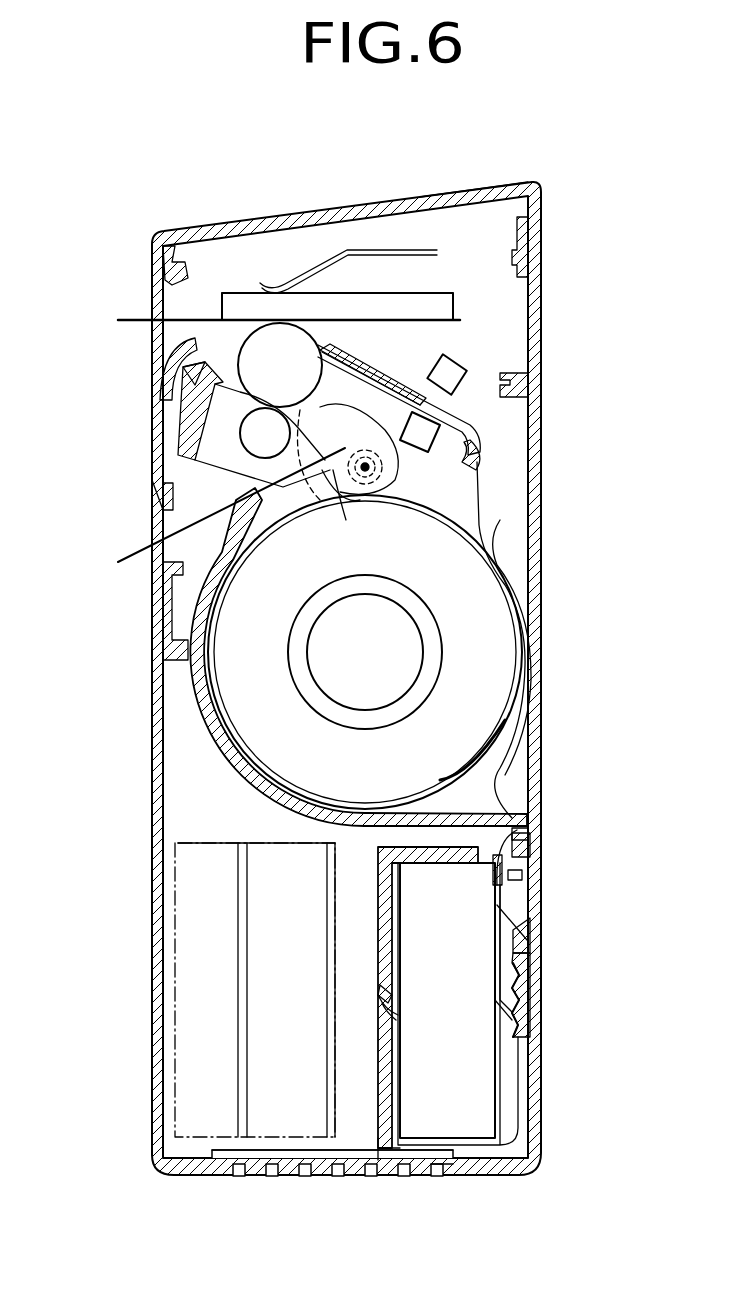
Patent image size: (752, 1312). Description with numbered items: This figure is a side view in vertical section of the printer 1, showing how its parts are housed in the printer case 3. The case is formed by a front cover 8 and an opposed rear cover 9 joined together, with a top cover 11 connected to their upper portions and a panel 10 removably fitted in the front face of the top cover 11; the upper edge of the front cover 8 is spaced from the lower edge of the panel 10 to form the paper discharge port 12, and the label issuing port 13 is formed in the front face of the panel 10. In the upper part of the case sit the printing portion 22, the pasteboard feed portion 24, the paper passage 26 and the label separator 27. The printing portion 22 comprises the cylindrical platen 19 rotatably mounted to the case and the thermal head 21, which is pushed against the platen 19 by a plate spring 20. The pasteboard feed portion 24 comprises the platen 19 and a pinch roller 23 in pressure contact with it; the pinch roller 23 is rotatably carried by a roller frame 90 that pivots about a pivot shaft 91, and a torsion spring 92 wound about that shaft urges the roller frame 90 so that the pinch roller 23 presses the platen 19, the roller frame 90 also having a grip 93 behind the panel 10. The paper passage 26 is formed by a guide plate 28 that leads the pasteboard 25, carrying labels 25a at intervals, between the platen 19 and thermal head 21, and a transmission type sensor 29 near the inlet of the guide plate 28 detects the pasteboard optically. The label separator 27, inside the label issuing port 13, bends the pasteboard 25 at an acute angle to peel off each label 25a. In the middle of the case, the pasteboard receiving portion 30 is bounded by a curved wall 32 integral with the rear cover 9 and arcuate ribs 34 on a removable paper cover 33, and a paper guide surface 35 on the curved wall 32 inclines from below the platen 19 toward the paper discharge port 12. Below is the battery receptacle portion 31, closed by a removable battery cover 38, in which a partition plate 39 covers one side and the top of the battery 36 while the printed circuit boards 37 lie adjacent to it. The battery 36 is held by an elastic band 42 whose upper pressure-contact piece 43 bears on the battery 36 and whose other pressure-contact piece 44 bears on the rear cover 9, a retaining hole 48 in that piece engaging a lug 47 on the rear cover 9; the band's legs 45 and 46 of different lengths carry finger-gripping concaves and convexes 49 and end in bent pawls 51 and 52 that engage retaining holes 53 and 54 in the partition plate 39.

The printer 1 is at (165, 210).
The printer case 3 is at (152, 699).
The front cover 8 is at (152, 830).
The rear cover 9 is at (541, 337).
The panel 10 is at (158, 380).
The top cover 11 is at (455, 182).
The paper discharge port 12 is at (163, 526).
The label issuing port 13 is at (165, 262).
The platen 19 is at (258, 340).
The plate spring 20 is at (318, 258).
The thermal head 21 is at (355, 300).
The printing portion 22 is at (395, 300).
The pinch roller 23 is at (255, 455).
The pasteboard feed portion 24 is at (190, 432).
The pasteboard 25 is at (480, 610).
The label 25a is at (118, 320).
The paper passage 26 is at (450, 412).
The label separator 27 is at (160, 352).
The guide plate 28 is at (418, 376).
The transmission type sensor 29 is at (520, 395).
The pasteboard receiving portion 30 is at (500, 527).
The battery receptacle portion 31 is at (515, 1088).
The curved wall 32 is at (220, 755).
The paper cover 33 is at (540, 662).
The arcuate ribs 34 is at (515, 735).
The paper guide surface 35 is at (348, 500).
The battery 36 is at (470, 1095).
The printed circuit boards 37 is at (240, 1058).
The battery cover 38 is at (541, 1040).
The partition plate 39 is at (378, 905).
The band 42 is at (535, 955).
The pressure-contact piece 43 is at (541, 818).
The pressure-contact piece 44 is at (542, 927).
The leg 45 is at (320, 1150).
The leg 46 is at (445, 1158).
The lug 47 is at (525, 870).
The retaining hole 48 is at (500, 918).
The concaves and convexes 49 is at (520, 990).
The pawl 51 is at (390, 1010).
The pawl 52 is at (385, 1150).
The retaining hole 53 is at (385, 995).
The retaining hole 54 is at (392, 1155).
The roller frame 90 is at (348, 390).
The pivot shaft 91 is at (400, 490).
The torsion spring 92 is at (382, 466).
The grip 93 is at (188, 390).